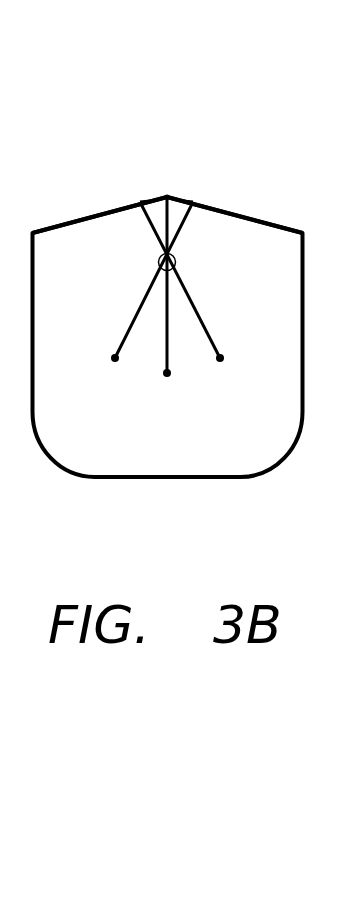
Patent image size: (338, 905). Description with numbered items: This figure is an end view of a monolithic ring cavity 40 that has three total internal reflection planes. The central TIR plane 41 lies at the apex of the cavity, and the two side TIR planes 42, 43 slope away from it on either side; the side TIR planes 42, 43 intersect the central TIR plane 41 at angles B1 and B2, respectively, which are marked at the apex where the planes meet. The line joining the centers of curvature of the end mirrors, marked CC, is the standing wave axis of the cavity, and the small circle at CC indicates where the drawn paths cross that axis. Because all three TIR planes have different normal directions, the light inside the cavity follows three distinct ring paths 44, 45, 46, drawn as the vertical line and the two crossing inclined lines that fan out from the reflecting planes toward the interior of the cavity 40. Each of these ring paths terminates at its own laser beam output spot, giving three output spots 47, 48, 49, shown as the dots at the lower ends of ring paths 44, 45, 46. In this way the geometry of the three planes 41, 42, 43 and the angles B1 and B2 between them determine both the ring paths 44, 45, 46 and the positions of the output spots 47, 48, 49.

The monolithic ring cavity 40 is at (160, 135).
The central TIR plane 41 is at (167, 197).
The side TIR plane 42 is at (50, 225).
The side TIR plane 43 is at (287, 223).
The ring path 44 is at (172, 356).
The ring path 45 is at (203, 318).
The ring path 46 is at (135, 318).
The laser beam output spot 47 is at (167, 373).
The laser beam output spot 48 is at (225, 358).
The laser beam output spot 49 is at (110, 359).
The angle beta one B1 is at (160, 197).
The angle beta two B2 is at (175, 197).
The centers of curvature of the end mirrors CC is at (175, 263).